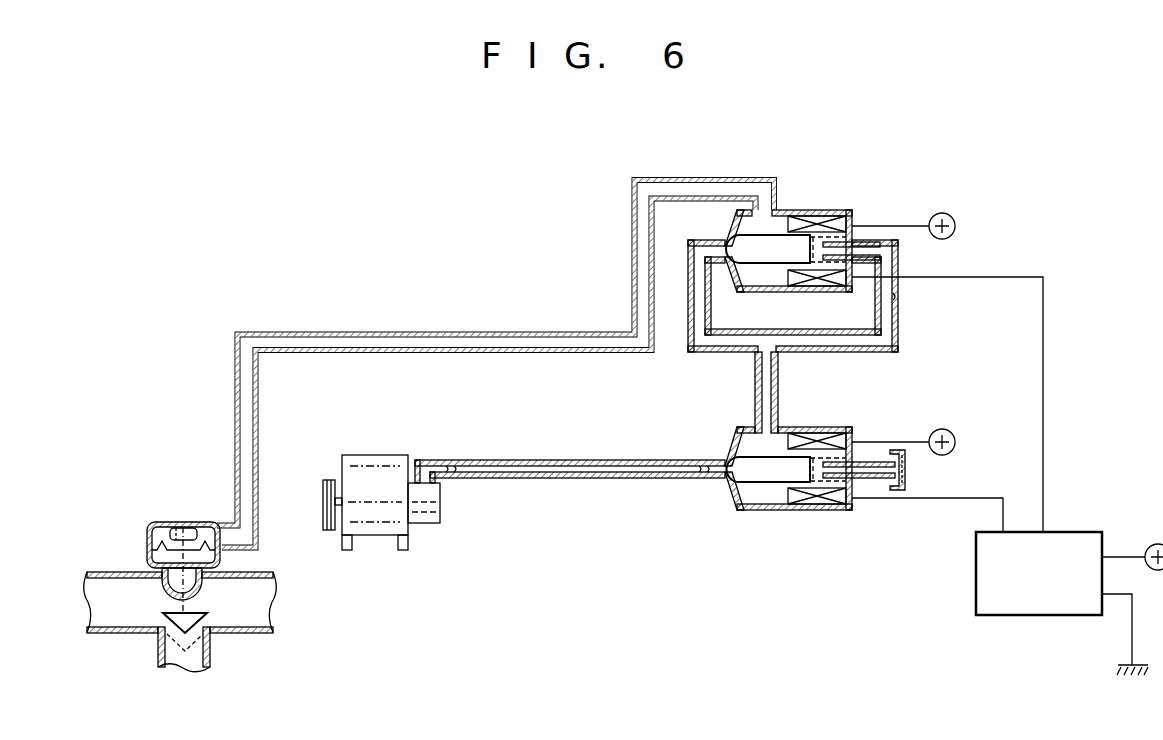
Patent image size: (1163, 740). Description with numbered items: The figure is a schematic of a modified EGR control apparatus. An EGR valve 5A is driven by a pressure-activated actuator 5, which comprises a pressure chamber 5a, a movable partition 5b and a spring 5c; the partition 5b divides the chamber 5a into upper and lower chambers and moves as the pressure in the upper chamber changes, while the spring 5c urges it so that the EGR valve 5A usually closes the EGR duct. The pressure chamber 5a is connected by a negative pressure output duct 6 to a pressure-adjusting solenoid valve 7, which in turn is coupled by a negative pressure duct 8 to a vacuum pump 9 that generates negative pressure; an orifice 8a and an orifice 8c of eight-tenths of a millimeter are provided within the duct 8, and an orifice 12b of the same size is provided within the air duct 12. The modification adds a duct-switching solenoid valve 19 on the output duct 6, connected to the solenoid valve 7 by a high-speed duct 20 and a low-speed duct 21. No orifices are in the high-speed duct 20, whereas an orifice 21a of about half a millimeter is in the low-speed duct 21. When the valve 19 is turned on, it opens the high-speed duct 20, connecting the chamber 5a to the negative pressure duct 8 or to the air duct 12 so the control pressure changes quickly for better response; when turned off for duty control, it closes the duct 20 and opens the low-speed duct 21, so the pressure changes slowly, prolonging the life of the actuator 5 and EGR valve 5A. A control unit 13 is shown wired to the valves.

The pressure-activated actuator 5 is at (150, 511).
The pressure chamber 5a is at (184, 530).
The movable partition 5b is at (152, 557).
The spring 5c is at (180, 528).
The EGR valve 5A is at (162, 618).
The negative pressure output duct 6 is at (440, 336).
The solenoid valve 7 is at (758, 514).
The negative pressure duct 8 is at (567, 480).
The orifice 8a is at (456, 483).
The orifice 8c is at (698, 484).
The vacuum pump 9 is at (374, 540).
The air duct 12 is at (905, 468).
The orifice 12b is at (873, 484).
The control unit 13 is at (977, 561).
The duct-switching solenoid valve 19 is at (822, 184).
The high-speed duct 20 is at (687, 343).
The low-speed duct 21 is at (804, 340).
The orifice 21a is at (908, 297).